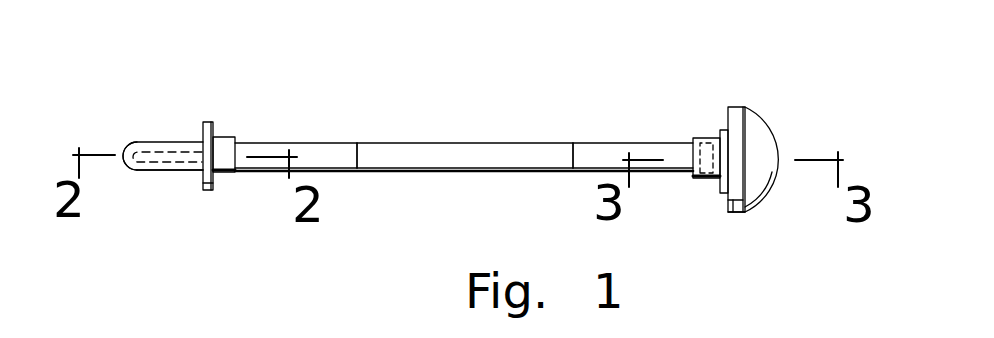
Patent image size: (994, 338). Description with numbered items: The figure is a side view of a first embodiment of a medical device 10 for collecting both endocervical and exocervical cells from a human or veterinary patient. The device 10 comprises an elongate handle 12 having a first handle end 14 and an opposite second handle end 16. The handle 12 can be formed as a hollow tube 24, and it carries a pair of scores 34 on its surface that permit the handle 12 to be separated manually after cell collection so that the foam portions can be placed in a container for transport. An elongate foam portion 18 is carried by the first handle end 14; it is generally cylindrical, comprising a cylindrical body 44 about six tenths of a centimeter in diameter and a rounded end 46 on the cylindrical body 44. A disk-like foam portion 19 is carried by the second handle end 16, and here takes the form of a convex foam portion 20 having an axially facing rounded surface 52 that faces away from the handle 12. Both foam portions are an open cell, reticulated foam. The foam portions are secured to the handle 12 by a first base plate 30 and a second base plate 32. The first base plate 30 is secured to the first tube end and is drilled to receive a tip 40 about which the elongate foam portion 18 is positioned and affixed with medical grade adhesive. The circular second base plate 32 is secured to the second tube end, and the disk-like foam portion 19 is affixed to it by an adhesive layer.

The medical device 10 is at (482, 62).
The elongate handle 12 is at (512, 168).
The first handle end 14 is at (335, 173).
The second handle end 16 is at (687, 177).
The elongate foam portion 18 is at (163, 143).
The disk-like foam portion 19 is at (755, 210).
The convex foam portion 20 is at (767, 118).
The hollow tube 24 is at (463, 173).
The first base plate 30 is at (215, 130).
The second base plate 32 is at (708, 138).
The scores 34 is at (358, 162).
The tip 40 is at (145, 150).
The cylindrical body 44 is at (173, 170).
The rounded end 46 is at (123, 168).
The rounded surface 52 is at (772, 173).